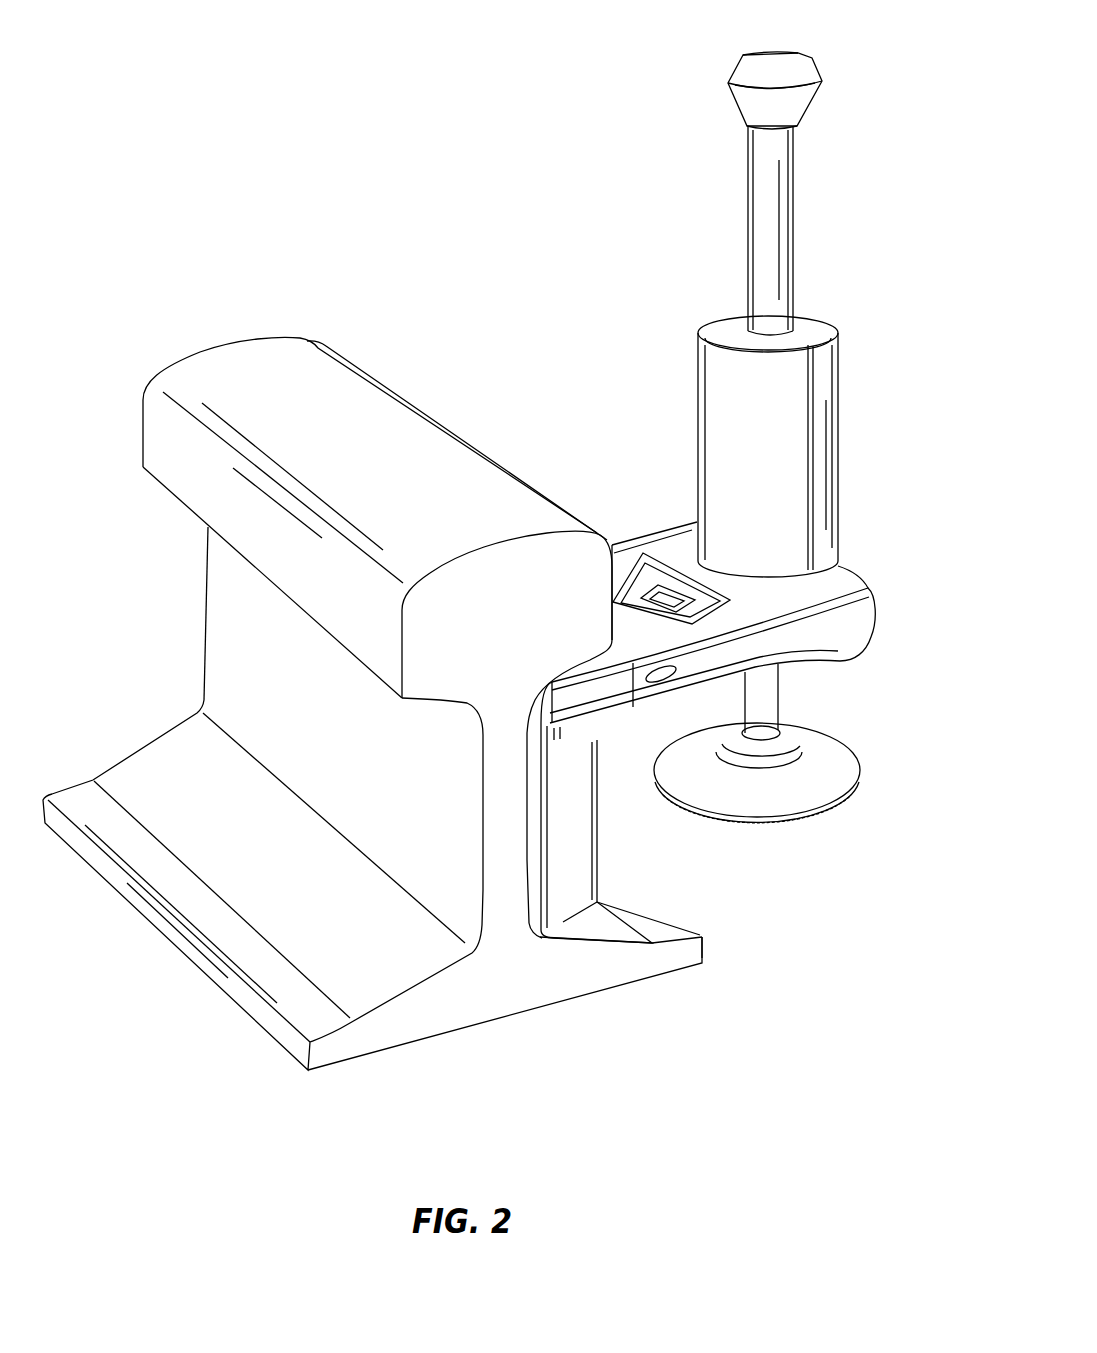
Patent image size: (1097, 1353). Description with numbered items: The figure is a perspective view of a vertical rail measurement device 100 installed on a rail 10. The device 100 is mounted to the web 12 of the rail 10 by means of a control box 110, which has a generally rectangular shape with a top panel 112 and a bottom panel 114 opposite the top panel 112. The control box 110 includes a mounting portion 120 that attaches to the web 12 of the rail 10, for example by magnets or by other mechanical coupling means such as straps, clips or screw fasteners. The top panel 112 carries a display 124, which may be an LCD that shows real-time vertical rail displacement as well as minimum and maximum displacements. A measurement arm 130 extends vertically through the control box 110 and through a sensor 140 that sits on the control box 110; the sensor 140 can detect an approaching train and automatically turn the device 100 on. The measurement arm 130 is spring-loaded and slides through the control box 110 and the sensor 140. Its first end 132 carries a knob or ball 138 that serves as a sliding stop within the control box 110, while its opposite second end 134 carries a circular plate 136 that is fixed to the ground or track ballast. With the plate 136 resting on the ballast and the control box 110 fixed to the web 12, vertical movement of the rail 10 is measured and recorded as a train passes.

The vertical rail measurement device 100 is at (498, 218).
The rail 10 is at (241, 392).
The web 12 is at (497, 808).
The control box 110 is at (787, 604).
The top panel 112 is at (672, 537).
The bottom panel 114 is at (813, 672).
The mounting portion 120 is at (565, 805).
The display 124 is at (648, 586).
The measurement arm 130 is at (752, 177).
The first end 132 is at (767, 153).
The second end 134 is at (766, 718).
The plate 136 is at (742, 797).
The knob or ball 138 is at (750, 72).
The sensor 140 is at (752, 405).